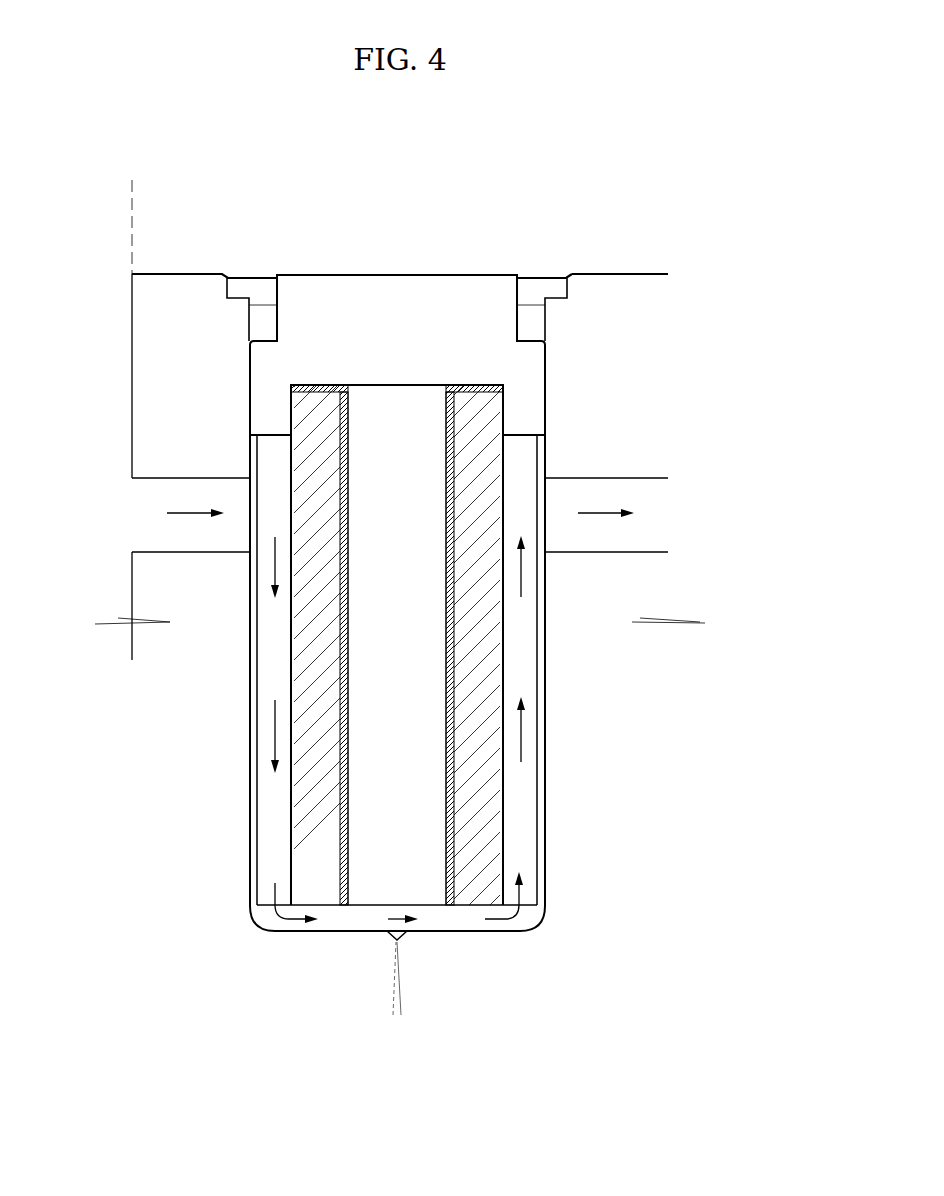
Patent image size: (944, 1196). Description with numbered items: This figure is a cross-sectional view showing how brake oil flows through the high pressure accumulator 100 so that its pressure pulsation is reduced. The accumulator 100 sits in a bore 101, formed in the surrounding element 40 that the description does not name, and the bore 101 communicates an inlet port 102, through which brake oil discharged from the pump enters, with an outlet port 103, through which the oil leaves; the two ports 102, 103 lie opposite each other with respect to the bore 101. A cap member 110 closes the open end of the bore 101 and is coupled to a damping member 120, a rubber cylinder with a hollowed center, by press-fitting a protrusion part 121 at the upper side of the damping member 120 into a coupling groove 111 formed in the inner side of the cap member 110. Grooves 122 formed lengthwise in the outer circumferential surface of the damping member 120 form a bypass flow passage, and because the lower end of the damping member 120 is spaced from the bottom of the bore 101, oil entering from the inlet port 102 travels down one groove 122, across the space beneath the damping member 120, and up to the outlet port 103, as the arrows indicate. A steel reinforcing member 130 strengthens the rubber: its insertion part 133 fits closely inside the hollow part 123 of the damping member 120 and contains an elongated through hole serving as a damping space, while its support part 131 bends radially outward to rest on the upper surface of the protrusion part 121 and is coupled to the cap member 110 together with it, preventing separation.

The cylinder block 40 is at (150, 322).
The high pressure accumulator 100 is at (472, 594).
The bore 101 is at (266, 670).
The inlet port 102 is at (156, 526).
The outlet port 103 is at (636, 527).
The cap member 110 is at (358, 277).
The coupling groove 111 is at (301, 412).
The damping member 120 is at (518, 791).
The protrusion part 121 is at (499, 408).
The groove 122 is at (528, 656).
The hollow part 123 is at (385, 523).
The reinforcing member 130 is at (472, 568).
The support part 131 is at (468, 385).
The insertion part 133 is at (352, 632).